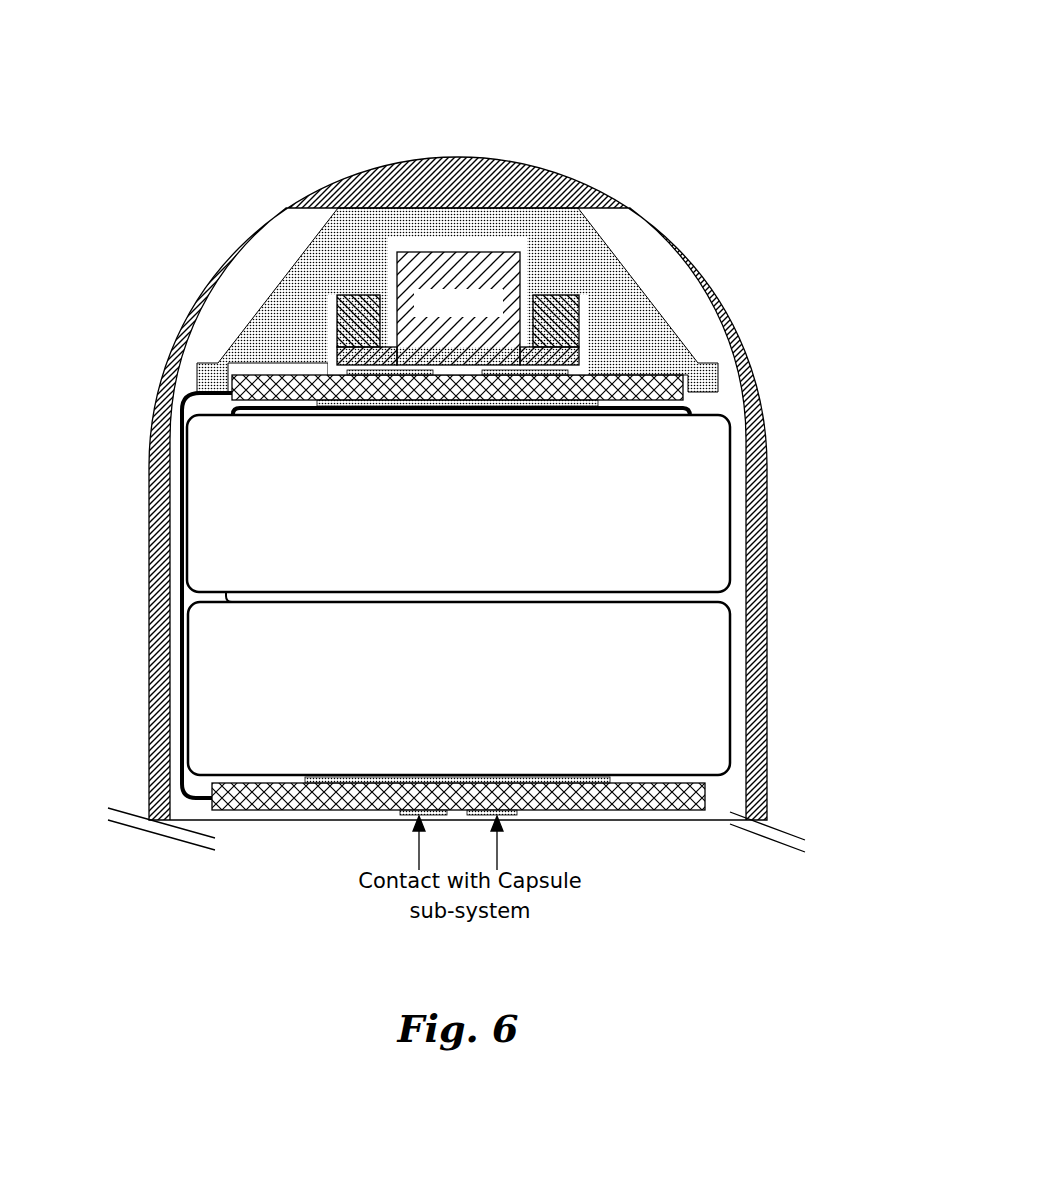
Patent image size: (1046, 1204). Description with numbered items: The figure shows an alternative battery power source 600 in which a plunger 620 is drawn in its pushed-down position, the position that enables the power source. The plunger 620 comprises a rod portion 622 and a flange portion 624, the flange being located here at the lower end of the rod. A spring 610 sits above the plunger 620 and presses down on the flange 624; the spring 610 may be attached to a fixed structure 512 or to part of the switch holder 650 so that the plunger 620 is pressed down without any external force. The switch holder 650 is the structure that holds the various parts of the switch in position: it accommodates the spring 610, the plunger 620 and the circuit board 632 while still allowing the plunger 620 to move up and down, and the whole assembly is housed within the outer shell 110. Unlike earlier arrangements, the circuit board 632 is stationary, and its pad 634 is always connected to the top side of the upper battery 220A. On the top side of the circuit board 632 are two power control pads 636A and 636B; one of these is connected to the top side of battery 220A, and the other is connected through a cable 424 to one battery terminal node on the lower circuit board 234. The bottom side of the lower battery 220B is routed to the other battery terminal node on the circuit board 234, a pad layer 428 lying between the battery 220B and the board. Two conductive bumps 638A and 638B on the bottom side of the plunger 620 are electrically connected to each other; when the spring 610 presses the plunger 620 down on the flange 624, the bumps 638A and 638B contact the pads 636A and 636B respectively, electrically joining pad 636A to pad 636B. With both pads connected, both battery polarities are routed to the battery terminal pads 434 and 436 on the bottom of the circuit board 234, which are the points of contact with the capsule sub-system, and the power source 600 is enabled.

The battery power source 600 is at (578, 95).
The housing shell 110 is at (572, 180).
The plunger 620 is at (458, 243).
The rod portion 622 is at (483, 275).
The switch holder 650 is at (372, 226).
The fixed structure 512 is at (364, 296).
The spring 610 is at (360, 328).
The conductive bump 638A is at (500, 368).
The conductive bump 638B is at (411, 368).
The flange portion 624 is at (360, 355).
The circuit board 632 is at (690, 388).
The pad 634 is at (455, 406).
The power control pad 636A is at (700, 416).
The power control pad 636B is at (233, 413).
The cable 424 is at (182, 592).
The battery 220A is at (735, 510).
The battery 220B is at (735, 692).
The conductive pad 428 is at (612, 779).
The circuit board 234 is at (700, 797).
The pad 434 is at (398, 813).
The pad 436 is at (518, 813).